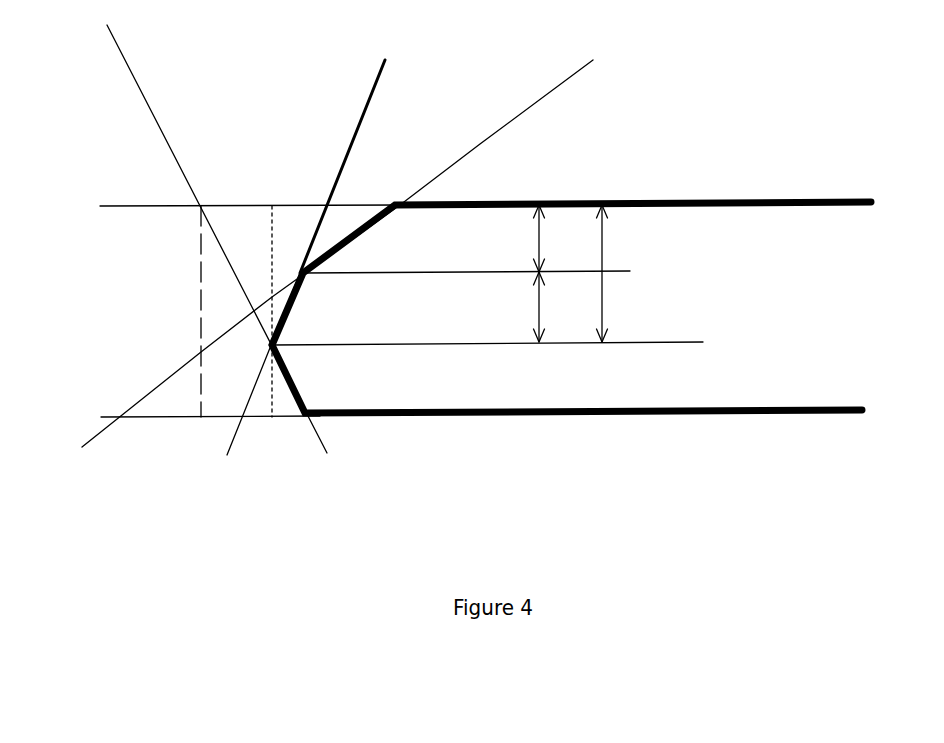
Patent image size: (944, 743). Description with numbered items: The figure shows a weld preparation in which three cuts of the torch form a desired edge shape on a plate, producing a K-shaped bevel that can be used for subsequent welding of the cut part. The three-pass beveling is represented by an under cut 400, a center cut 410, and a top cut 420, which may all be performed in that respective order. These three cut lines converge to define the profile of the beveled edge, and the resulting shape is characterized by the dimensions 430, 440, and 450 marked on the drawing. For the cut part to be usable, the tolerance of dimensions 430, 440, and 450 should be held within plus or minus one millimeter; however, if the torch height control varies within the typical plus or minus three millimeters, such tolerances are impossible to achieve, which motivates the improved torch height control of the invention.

The under cut 400 is at (187, 239).
The center cut 410 is at (324, 257).
The top cut 420 is at (359, 253).
The dimension 430 is at (554, 238).
The dimension 440 is at (619, 273).
The dimension 450 is at (554, 307).